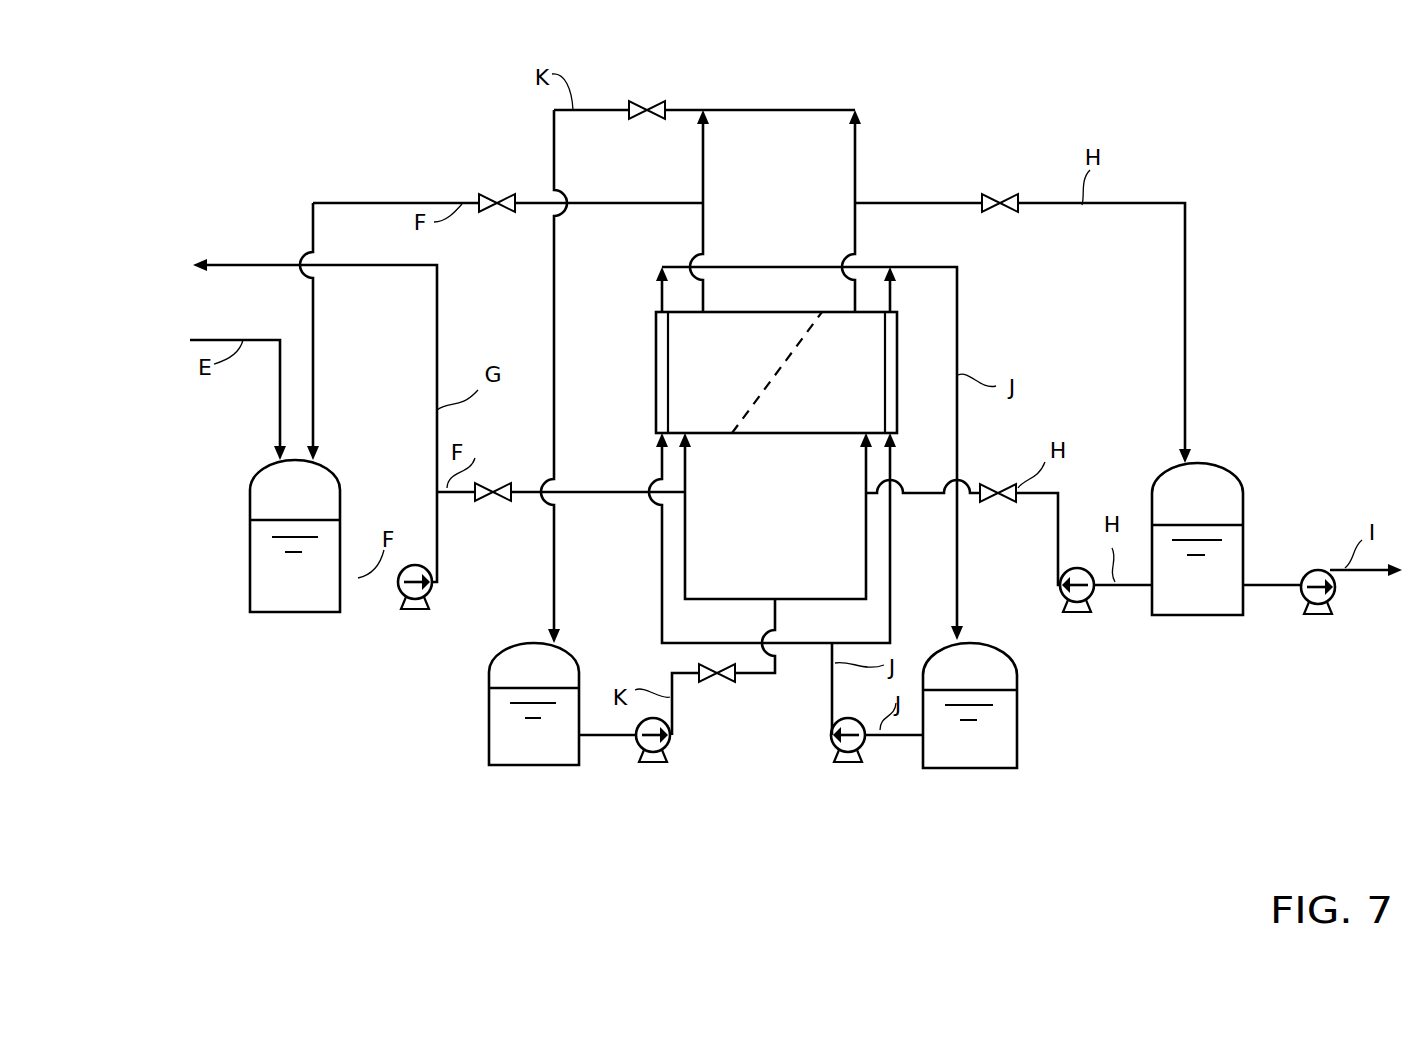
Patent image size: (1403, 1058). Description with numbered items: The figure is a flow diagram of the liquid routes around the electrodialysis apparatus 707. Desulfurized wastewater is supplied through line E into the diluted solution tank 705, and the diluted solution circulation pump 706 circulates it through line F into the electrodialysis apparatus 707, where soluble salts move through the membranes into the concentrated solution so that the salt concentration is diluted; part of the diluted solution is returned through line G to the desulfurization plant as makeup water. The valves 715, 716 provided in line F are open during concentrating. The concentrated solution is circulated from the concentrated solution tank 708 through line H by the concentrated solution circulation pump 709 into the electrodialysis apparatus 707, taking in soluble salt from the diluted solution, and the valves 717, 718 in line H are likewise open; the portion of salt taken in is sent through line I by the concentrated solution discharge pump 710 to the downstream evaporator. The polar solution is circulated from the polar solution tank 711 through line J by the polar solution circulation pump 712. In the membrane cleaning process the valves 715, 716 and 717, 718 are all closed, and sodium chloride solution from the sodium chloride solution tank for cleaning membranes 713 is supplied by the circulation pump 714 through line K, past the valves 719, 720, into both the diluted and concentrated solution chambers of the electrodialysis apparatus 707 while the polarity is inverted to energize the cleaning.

The diluted solution tank 705 is at (264, 608).
The diluted solution circulation pump 706 is at (406, 606).
The electrodialysis apparatus 707 is at (792, 413).
The concentrated solution tank 708 is at (1192, 617).
The concentrated solution circulation pump 709 is at (1068, 596).
The concentrated solution discharge pump 710 is at (1320, 612).
The polar solution tank 711 is at (988, 769).
The polar solution circulation pump 712 is at (842, 766).
The sodium chloride solution tank for cleaning membranes 713 is at (505, 752).
The circulation pump of sodium chloride solution for cleaning membranes 714 is at (653, 767).
The valve 715 is at (492, 502).
The valve 716 is at (508, 212).
The valve 717 is at (1006, 503).
The valve 718 is at (1008, 214).
The valve 719 is at (712, 683).
The valve 720 is at (640, 120).